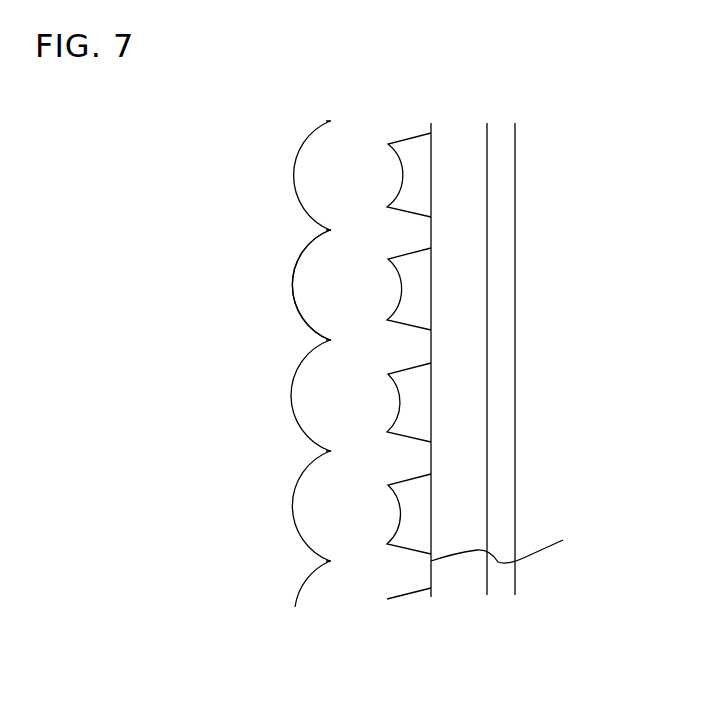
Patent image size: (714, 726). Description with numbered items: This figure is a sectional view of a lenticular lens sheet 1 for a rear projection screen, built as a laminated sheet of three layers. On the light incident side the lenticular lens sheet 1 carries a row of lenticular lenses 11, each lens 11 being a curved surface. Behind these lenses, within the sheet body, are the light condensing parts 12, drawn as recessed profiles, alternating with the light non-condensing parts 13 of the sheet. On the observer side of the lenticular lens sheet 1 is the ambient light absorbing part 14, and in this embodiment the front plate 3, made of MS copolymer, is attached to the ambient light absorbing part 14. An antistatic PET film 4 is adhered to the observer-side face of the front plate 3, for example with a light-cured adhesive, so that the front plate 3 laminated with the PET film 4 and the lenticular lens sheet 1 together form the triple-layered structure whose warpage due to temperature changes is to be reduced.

The lenticular lens sheet 1 is at (308, 527).
The lenticular lens 11 is at (295, 293).
The light condensing part 12 is at (398, 289).
The light non-condensing part 13 is at (404, 589).
The front plate 3 is at (448, 578).
The PET film 4 is at (503, 578).
The ambient light absorbing part 14 is at (514, 543).